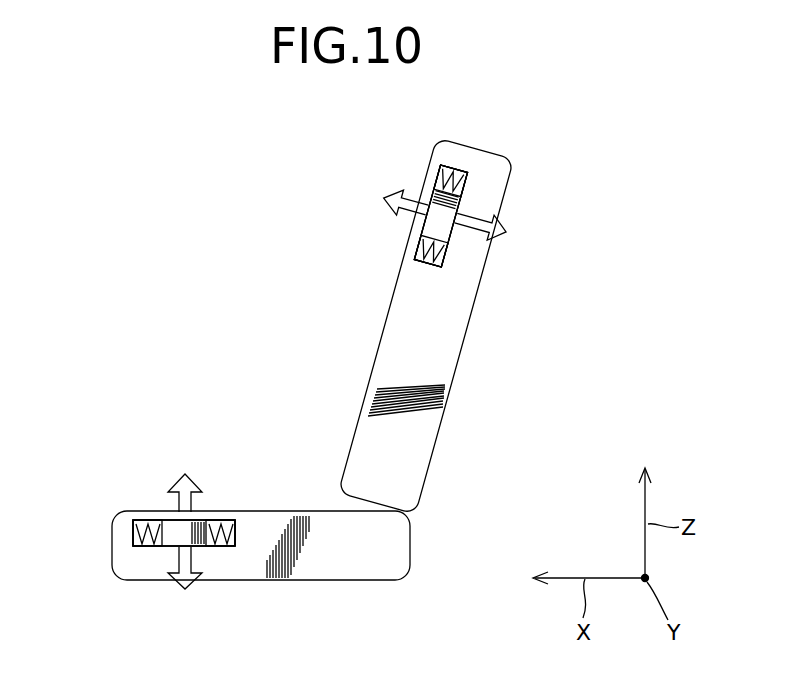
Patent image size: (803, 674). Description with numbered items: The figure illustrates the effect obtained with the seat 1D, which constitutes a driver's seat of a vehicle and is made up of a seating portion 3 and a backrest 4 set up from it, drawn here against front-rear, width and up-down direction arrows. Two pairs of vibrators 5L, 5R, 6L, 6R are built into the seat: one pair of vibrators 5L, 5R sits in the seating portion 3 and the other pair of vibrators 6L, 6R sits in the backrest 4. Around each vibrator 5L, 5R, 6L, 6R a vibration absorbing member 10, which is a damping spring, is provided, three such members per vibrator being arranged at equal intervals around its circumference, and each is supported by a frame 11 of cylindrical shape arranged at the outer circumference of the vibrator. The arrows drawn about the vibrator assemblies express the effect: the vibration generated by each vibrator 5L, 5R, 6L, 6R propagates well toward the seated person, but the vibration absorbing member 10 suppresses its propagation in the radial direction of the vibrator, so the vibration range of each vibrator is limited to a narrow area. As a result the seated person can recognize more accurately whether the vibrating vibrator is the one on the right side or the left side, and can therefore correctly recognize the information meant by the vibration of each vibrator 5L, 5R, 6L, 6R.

The seat 1D is at (646, 142).
The seating portion 3 is at (363, 568).
The backrest 4 is at (448, 363).
The vibrator 5L is at (174, 539).
The vibrator 5R is at (184, 533).
The vibrator 6L is at (442, 190).
The vibrator 6R is at (440, 216).
The vibration absorbing member 10 is at (443, 167).
The frame 11 is at (427, 268).